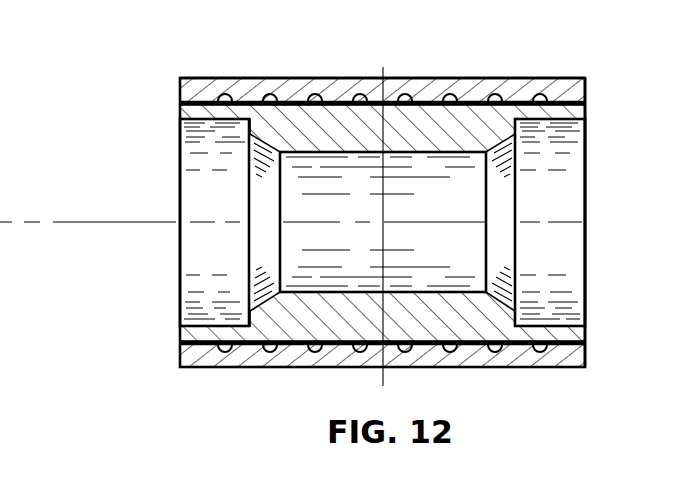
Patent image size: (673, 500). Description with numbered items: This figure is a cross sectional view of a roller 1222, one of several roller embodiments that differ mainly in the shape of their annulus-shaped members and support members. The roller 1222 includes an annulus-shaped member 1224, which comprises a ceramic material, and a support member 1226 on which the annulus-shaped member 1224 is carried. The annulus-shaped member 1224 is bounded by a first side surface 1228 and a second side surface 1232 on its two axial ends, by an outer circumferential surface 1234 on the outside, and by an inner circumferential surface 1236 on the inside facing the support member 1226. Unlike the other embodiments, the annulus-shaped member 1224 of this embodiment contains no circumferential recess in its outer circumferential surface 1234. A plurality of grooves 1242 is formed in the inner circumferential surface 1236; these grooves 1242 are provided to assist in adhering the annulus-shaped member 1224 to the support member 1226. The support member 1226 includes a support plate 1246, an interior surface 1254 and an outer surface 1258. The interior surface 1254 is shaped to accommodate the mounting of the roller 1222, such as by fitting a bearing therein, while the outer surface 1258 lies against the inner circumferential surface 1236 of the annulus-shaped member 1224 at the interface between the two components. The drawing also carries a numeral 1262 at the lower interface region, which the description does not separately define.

The roller 1222 is at (295, 58).
The annulus-shaped member 1224 is at (467, 83).
The support member 1226 is at (584, 115).
The first side surface 1228 is at (197, 80).
The second side surface 1232 is at (586, 85).
The outer circumferential surface 1234 is at (443, 78).
The inner circumferential surface 1236 is at (557, 104).
The grooves 1242 is at (540, 100).
The support plate 1246 is at (186, 113).
The interior surface 1254 is at (552, 327).
The outer surface 1258 is at (555, 346).
The lower interface layer 1262 is at (180, 341).